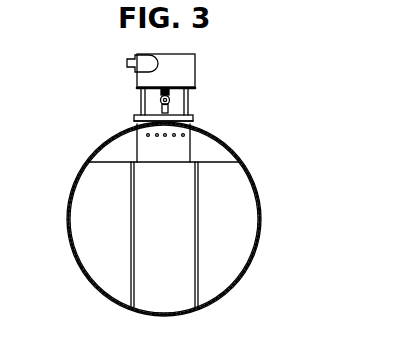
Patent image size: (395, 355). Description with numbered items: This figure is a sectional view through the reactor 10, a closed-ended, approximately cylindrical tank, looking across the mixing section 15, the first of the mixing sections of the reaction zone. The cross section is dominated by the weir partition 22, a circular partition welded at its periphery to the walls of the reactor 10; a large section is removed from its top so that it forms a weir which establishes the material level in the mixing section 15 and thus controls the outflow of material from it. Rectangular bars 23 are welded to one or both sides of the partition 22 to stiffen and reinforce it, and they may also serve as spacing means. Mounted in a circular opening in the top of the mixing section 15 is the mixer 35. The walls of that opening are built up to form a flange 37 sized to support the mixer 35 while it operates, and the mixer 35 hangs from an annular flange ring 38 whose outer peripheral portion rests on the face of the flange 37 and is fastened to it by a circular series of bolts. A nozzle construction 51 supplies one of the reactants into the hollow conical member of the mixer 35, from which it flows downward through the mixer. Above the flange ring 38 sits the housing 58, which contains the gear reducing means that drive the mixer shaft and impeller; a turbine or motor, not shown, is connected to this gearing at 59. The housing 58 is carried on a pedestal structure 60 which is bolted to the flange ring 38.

The reactor 10 is at (251, 174).
The mixing section 15 is at (126, 152).
The weir partition 22 is at (236, 214).
The rectangular bars 23 is at (195, 216).
The mixer 35 is at (176, 149).
The flange 37 is at (199, 124).
The annular flange ring 38 is at (195, 117).
The nozzle construction 51 is at (160, 100).
The housing 58 is at (197, 68).
The connection to gear reducing means 59 is at (135, 59).
The pedestal structure 60 is at (197, 88).